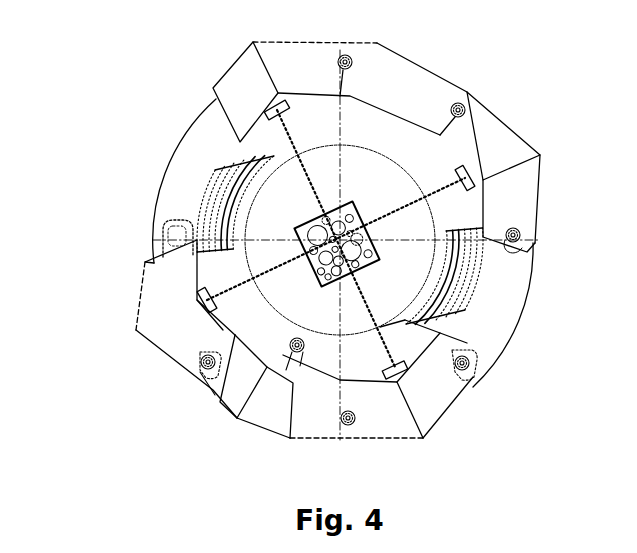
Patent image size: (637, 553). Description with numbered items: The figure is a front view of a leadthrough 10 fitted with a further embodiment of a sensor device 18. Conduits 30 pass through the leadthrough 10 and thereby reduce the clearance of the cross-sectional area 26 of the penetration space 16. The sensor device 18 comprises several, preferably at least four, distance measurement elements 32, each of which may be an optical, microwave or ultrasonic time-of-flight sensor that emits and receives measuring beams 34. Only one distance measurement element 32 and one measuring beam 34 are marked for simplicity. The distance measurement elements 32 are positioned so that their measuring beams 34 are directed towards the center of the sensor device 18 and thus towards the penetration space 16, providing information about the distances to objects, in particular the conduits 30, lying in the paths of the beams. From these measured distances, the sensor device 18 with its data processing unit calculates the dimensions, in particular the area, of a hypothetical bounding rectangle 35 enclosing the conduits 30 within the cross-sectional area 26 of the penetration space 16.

The leadthrough 10 is at (168, 93).
The penetration space 16 is at (385, 245).
The sensor device 18 is at (172, 280).
The cross-sectional area 26 is at (372, 203).
The conduits 30 is at (332, 257).
The distance measurement elements 32 is at (397, 377).
The measuring beams 34 is at (388, 330).
The hypothetical bounding rectangle 35 is at (313, 222).